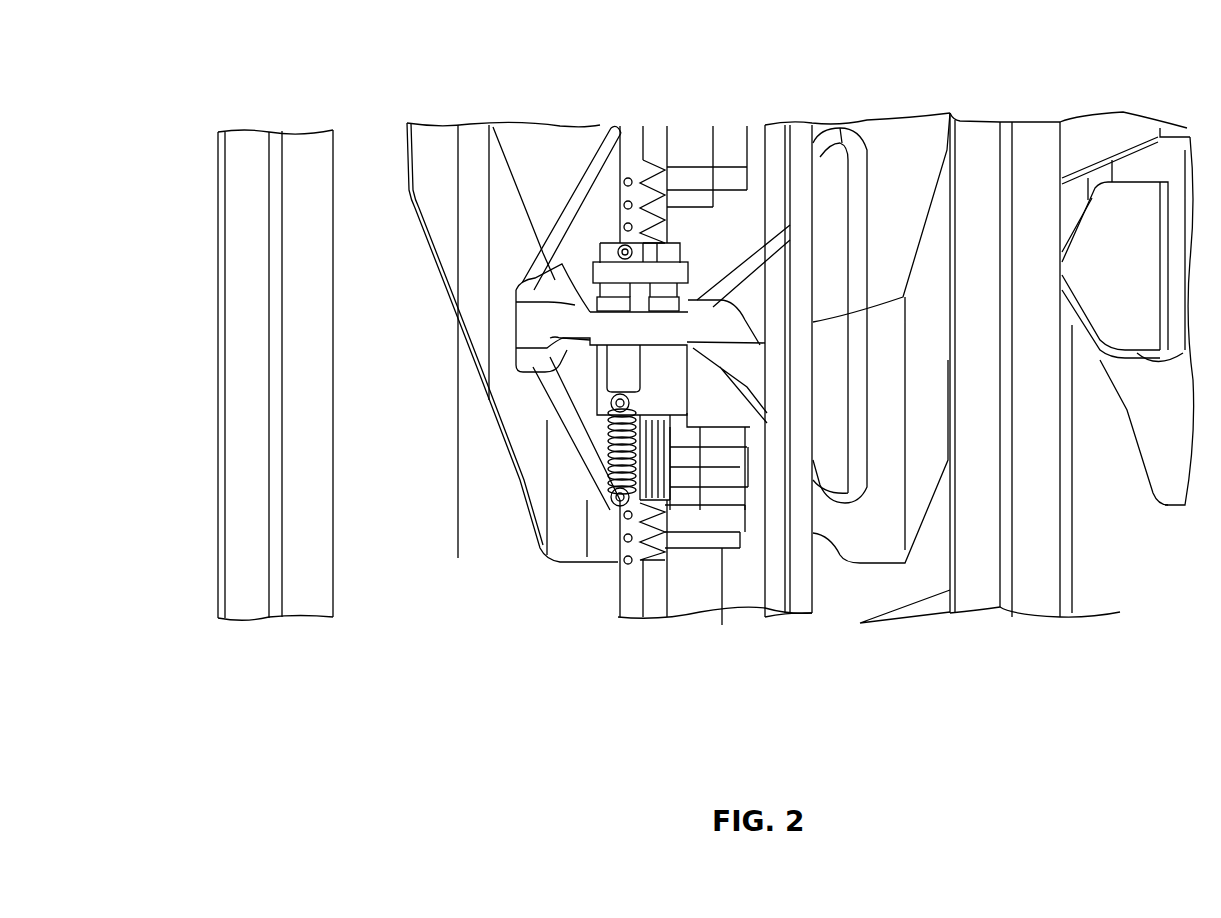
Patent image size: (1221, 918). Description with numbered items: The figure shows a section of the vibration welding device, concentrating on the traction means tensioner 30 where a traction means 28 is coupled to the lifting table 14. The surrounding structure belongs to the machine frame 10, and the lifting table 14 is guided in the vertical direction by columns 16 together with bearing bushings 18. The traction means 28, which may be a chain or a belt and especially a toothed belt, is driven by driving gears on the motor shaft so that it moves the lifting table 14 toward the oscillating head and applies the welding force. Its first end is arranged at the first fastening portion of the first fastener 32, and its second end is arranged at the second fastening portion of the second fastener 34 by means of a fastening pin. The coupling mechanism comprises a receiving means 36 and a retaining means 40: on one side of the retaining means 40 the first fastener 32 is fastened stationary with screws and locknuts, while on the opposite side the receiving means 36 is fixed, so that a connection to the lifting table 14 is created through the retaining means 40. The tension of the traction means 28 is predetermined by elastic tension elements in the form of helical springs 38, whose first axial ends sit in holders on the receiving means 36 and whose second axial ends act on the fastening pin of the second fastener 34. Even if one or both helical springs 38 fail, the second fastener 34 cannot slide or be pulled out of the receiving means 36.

The machine frame 10 is at (250, 500).
The lifting table 14 is at (543, 150).
The columns 16 is at (700, 230).
The bearing bushings 18 is at (681, 153).
The traction means 28 is at (775, 140).
The traction means tensioner 30 is at (505, 320).
The first fastener 32 is at (613, 270).
The second fastener 34 is at (613, 490).
The receiving means 36 is at (600, 362).
The helical springs 38 is at (640, 468).
The retaining means 40 is at (580, 297).